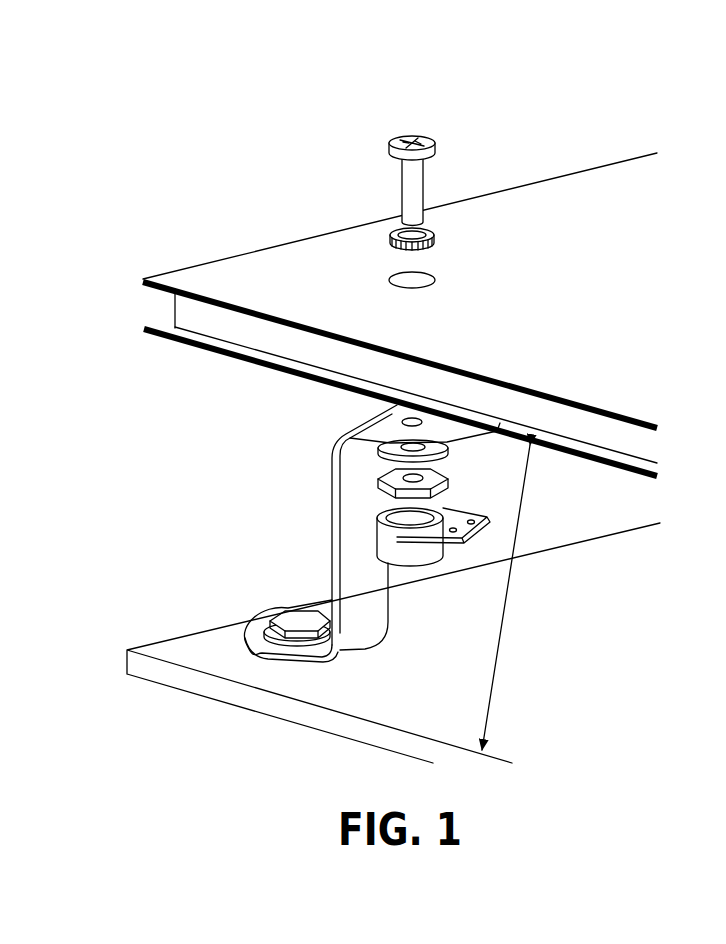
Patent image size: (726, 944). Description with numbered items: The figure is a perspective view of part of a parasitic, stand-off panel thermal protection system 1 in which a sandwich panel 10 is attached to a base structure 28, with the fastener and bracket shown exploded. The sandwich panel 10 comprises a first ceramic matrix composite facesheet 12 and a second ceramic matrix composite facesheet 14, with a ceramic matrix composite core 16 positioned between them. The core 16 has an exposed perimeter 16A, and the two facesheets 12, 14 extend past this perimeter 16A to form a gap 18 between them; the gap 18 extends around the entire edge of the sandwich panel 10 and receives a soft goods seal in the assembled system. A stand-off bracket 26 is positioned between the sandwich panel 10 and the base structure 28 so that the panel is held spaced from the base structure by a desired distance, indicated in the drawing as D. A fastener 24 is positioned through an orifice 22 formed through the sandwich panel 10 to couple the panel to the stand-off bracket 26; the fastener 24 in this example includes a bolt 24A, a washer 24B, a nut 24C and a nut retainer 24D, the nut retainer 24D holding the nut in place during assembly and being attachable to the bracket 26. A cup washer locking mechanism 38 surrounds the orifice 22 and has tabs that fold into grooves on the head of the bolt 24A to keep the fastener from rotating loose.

The thermal protection system 1 is at (166, 122).
The sandwich panel 10 is at (548, 138).
The first ceramic matrix composite facesheet 12 is at (260, 362).
The second ceramic matrix composite facesheet 14 is at (310, 248).
The ceramic matrix composite core 16 is at (192, 314).
The perimeter 16A is at (235, 327).
The gap 18 is at (158, 298).
The orifice 22 is at (430, 273).
The fastener 24 is at (332, 153).
The bolt 24A is at (390, 147).
The washer 24B is at (447, 455).
The nut 24C is at (380, 487).
The nut retainer 24D is at (390, 562).
The stand-off bracket 26 is at (333, 453).
The base structure 28 is at (280, 703).
The cup washer locking mechanism 38 is at (387, 232).